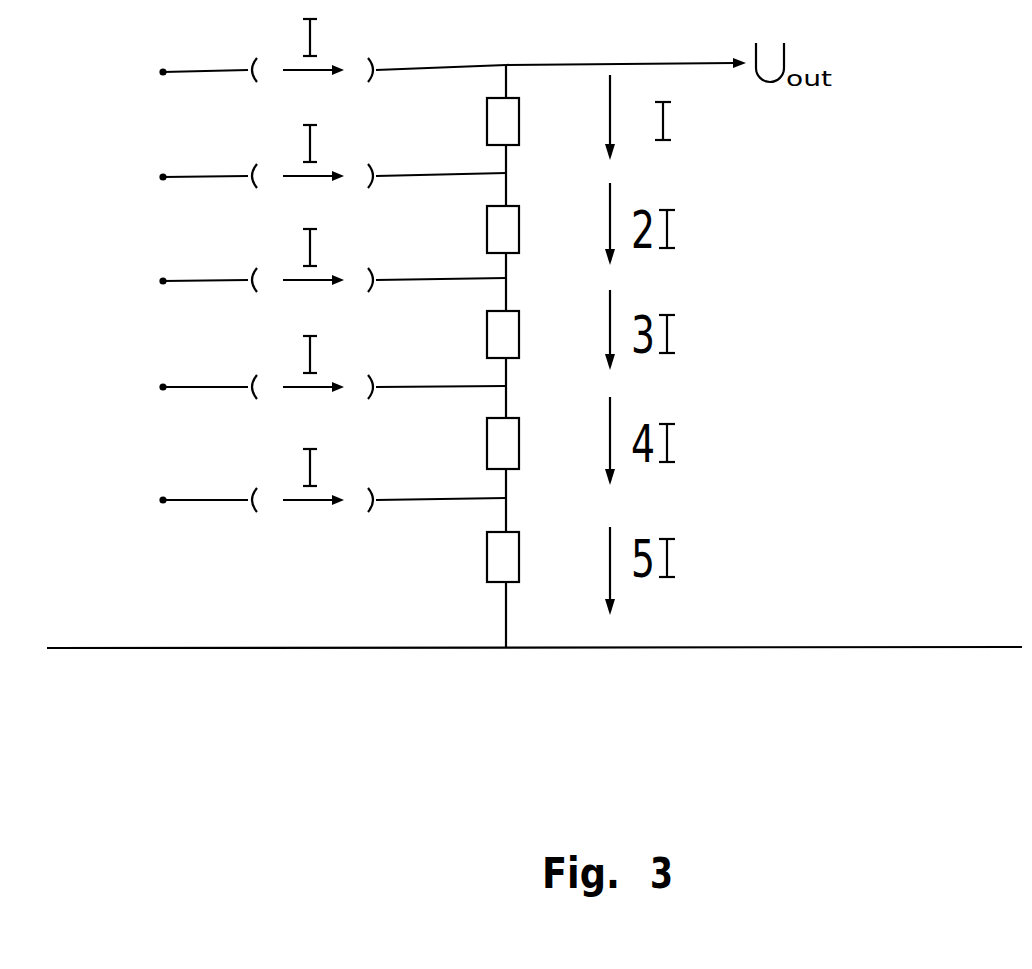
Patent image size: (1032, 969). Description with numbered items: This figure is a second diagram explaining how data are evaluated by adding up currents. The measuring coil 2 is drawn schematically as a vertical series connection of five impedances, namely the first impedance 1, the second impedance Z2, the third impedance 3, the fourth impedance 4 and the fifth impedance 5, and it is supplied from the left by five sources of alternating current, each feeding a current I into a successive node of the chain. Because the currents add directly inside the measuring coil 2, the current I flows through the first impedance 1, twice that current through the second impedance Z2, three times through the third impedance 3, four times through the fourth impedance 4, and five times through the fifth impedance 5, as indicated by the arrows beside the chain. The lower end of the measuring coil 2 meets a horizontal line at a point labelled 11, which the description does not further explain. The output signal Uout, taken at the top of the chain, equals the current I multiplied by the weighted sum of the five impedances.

The measuring coil 2 is at (470, 613).
The ground connection 11 is at (598, 738).
The impedance 1 is at (468, 121).
The impedance Z2 is at (468, 229).
The impedance 3 is at (468, 334).
The impedance 4 is at (468, 441).
The impedance 5 is at (468, 555).